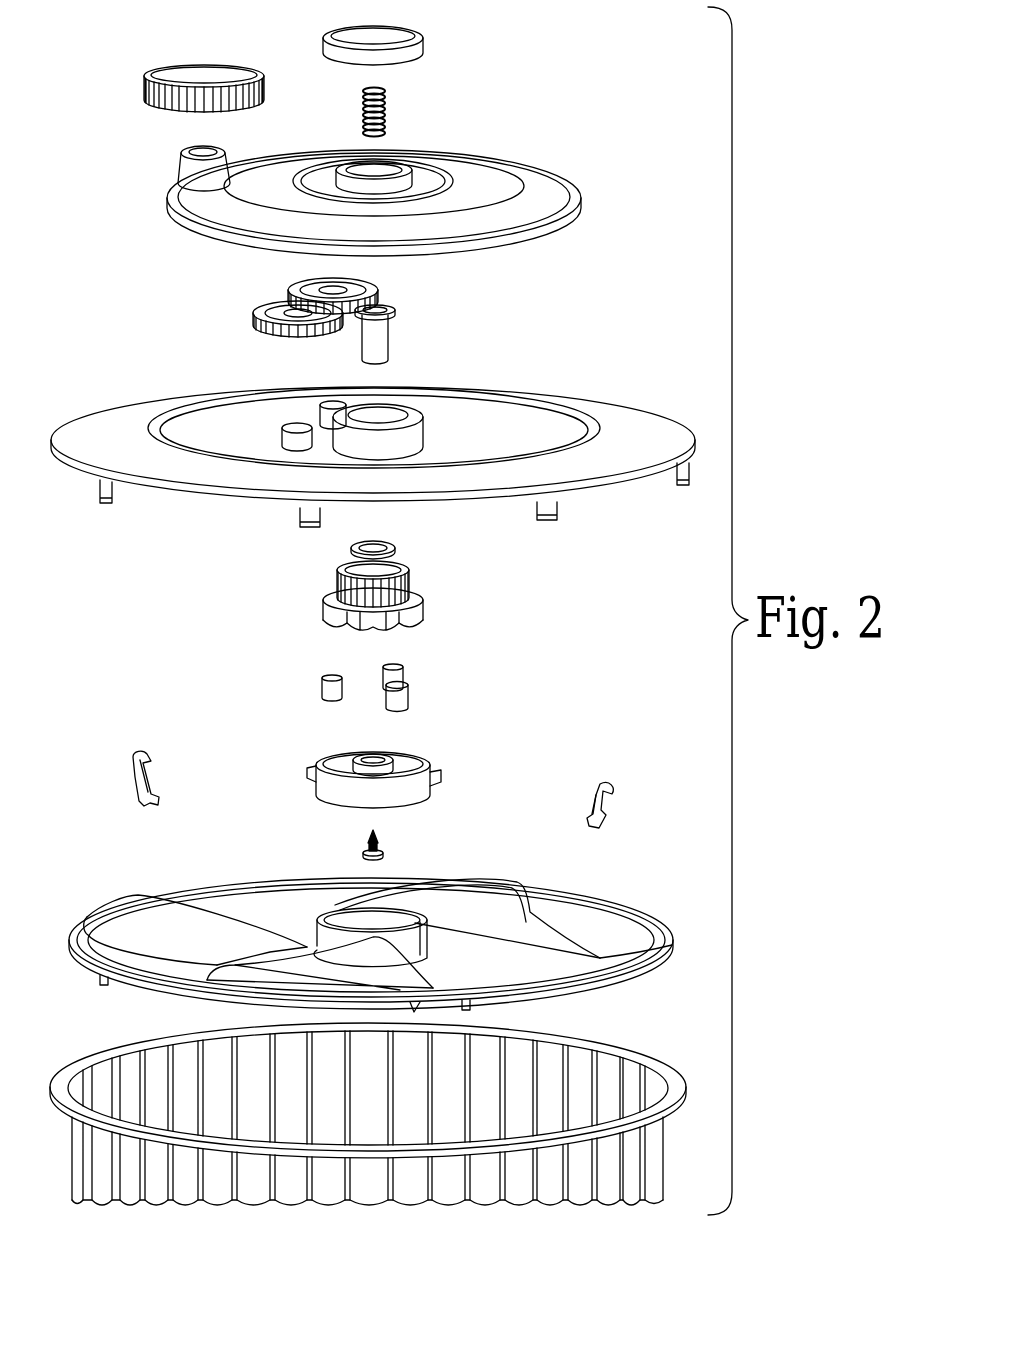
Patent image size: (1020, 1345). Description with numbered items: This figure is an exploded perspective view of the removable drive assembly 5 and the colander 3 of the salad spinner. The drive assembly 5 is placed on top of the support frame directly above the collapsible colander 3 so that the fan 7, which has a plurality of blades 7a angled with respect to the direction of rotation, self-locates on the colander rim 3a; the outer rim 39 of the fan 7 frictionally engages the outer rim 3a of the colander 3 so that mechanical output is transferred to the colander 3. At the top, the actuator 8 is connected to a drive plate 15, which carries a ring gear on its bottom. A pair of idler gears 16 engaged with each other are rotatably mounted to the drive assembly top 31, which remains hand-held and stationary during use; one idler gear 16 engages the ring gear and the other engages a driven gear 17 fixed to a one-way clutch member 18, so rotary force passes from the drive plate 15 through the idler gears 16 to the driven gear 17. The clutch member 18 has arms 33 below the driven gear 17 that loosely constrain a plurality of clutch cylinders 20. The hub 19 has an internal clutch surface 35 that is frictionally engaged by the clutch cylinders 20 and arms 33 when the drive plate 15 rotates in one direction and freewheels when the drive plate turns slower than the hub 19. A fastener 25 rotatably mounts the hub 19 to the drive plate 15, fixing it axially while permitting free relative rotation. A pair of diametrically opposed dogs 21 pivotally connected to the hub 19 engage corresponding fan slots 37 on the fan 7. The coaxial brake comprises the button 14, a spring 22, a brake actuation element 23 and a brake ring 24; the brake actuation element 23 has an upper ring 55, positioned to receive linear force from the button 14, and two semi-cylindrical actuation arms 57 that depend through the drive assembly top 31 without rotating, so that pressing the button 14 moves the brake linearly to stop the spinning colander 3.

The removable drive assembly 5 is at (118, 603).
The button 14 is at (424, 42).
The actuator 8 is at (143, 92).
The spring 22 is at (386, 100).
The drive plate 15 is at (566, 187).
The idler gears 16 is at (366, 289).
The upper ring 55 is at (396, 310).
The brake actuation element 23 is at (388, 340).
The actuation arms 57 is at (362, 350).
The drive assembly top 31 is at (630, 425).
The brake ring 24 is at (396, 548).
The driven gear 17 is at (410, 582).
The arms 33 is at (422, 618).
The clutch member 18 is at (400, 630).
The clutch cylinders 20 is at (410, 692).
The internal clutch surface 35 is at (425, 800).
The hub 19 is at (410, 765).
The fastener 25 is at (382, 842).
The dogs 21 is at (133, 785).
The fan 7 is at (620, 908).
The blades 7a is at (120, 915).
The fan slots 37 is at (312, 920).
The outer rim 39 is at (655, 940).
The colander 3 is at (580, 1058).
The colander rim 3a is at (62, 1078).